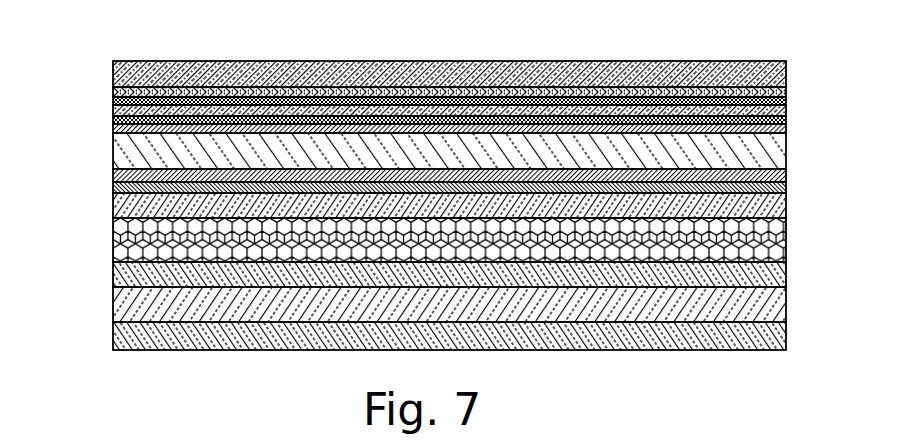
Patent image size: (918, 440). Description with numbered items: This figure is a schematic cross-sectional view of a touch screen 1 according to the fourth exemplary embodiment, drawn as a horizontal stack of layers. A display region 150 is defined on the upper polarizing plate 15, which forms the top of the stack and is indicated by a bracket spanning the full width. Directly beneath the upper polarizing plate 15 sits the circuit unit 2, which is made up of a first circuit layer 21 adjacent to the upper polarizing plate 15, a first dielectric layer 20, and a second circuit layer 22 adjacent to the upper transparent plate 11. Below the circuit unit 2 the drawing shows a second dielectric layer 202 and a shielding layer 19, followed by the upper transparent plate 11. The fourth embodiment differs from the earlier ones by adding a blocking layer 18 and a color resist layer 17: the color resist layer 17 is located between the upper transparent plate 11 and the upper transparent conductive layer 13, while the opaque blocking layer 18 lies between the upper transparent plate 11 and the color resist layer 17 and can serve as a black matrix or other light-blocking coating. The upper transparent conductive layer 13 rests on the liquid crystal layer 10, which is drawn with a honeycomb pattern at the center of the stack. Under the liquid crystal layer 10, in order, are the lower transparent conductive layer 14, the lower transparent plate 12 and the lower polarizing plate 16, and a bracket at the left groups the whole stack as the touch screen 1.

The display region 150 is at (113, 52).
The touch screen 1 is at (108, 350).
The circuit unit 2 is at (108, 88).
The upper polarizing plate 15 is at (150, 79).
The first circuit layer 21 is at (786, 92).
The first dielectric layer 20 is at (786, 101).
The second circuit layer 22 is at (786, 110).
The second dielectric layer 202 is at (786, 120).
The shielding layer 19 is at (786, 128).
The upper transparent plate 11 is at (150, 157).
The blocking layer 18 is at (786, 176).
The color resist layer 17 is at (786, 188).
The upper transparent conductive layer 13 is at (150, 208).
The liquid crystal layer 10 is at (140, 233).
The lower transparent conductive layer 14 is at (140, 280).
The lower transparent plate 12 is at (140, 308).
The lower polarizing plate 16 is at (140, 340).